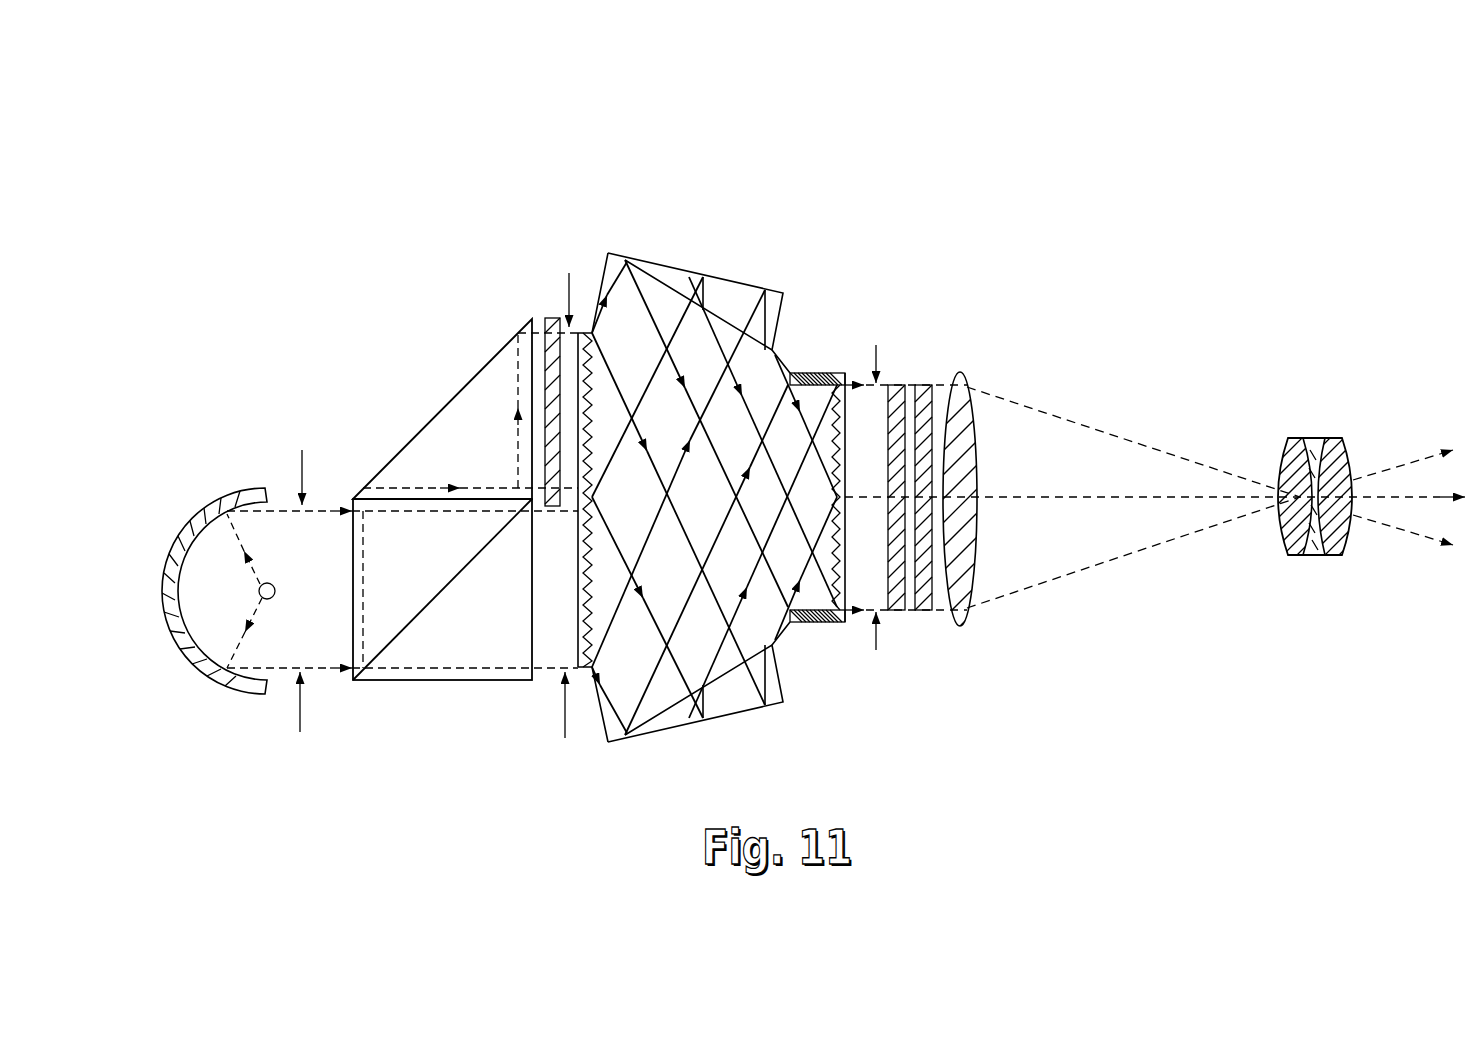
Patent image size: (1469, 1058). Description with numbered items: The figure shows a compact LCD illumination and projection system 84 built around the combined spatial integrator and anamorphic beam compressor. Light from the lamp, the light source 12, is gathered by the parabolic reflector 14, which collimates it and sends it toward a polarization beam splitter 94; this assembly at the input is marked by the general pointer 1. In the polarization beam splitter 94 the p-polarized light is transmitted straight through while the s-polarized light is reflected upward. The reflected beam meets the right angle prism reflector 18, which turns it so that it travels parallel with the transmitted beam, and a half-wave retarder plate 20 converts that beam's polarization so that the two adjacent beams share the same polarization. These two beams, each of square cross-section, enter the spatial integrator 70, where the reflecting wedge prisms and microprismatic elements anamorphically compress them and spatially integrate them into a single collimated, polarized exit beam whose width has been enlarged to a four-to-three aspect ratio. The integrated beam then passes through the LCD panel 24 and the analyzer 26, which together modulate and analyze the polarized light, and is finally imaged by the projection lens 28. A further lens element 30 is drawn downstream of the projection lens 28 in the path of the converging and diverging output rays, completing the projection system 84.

The light source assembly 1 is at (183, 670).
The light source 12 is at (269, 599).
The parabolic reflector 14 is at (187, 525).
The right angle prism reflector 18 is at (430, 417).
The half-wave retarder plate 20 is at (552, 318).
The LCD panel 24 is at (895, 383).
The analyzer 26 is at (922, 612).
The projection lens 28 is at (978, 482).
The lens 30 is at (1313, 436).
The spatial integrator 70 is at (840, 245).
The compact LCD illumination and projection system 84 is at (453, 240).
The polarization beam splitter 94 is at (458, 681).